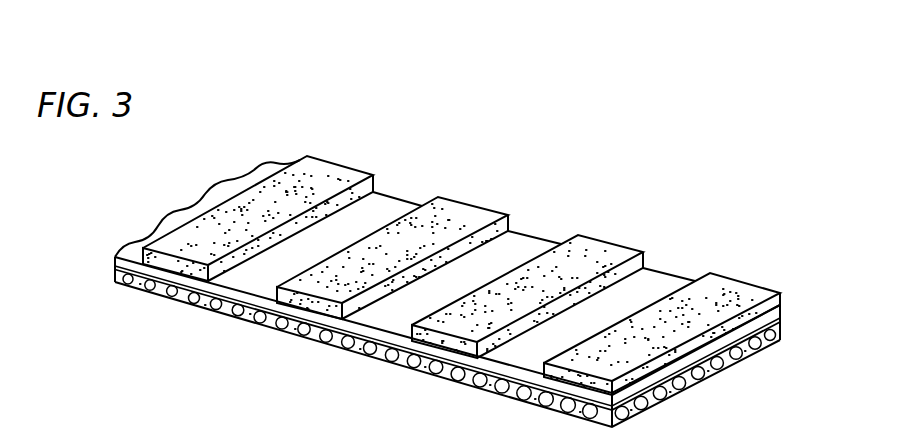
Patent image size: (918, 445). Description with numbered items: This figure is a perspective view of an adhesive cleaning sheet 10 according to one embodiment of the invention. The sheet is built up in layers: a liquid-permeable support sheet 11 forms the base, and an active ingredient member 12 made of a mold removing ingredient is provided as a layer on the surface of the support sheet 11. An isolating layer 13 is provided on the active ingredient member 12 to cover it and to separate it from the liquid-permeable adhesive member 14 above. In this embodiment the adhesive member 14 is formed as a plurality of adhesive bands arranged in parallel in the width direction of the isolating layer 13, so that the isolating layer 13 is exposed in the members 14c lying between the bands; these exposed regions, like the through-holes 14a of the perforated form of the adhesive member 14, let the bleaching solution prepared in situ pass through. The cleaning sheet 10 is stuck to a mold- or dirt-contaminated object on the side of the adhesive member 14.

The adhesive cleaning sheet 10 is at (711, 189).
The liquid-permeable support sheet 11 is at (757, 348).
The active ingredient member 12 is at (782, 325).
The isolating layer 13 is at (782, 312).
The liquid-permeable adhesive member 14 is at (587, 165).
The through-holes 14a is at (465, 208).
The exposed members 14c is at (667, 280).